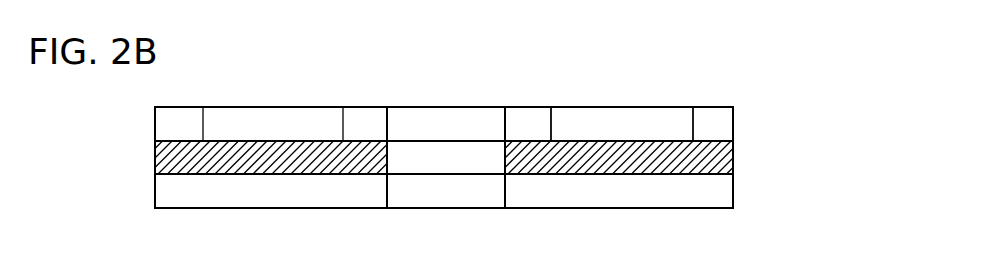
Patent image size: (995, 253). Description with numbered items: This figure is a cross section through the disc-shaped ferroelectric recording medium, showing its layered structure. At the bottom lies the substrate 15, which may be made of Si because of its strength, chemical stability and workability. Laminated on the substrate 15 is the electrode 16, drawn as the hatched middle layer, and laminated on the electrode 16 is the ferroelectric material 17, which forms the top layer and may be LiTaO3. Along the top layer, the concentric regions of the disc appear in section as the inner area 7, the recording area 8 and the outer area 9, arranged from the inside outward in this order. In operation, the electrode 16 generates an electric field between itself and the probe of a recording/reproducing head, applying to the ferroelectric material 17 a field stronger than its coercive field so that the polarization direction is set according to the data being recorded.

The inner area 7 is at (524, 105).
The recording area 8 is at (643, 105).
The outer area 9 is at (723, 105).
The substrate 15 is at (735, 184).
The electrode 16 is at (735, 152).
The ferroelectric material 17 is at (735, 118).